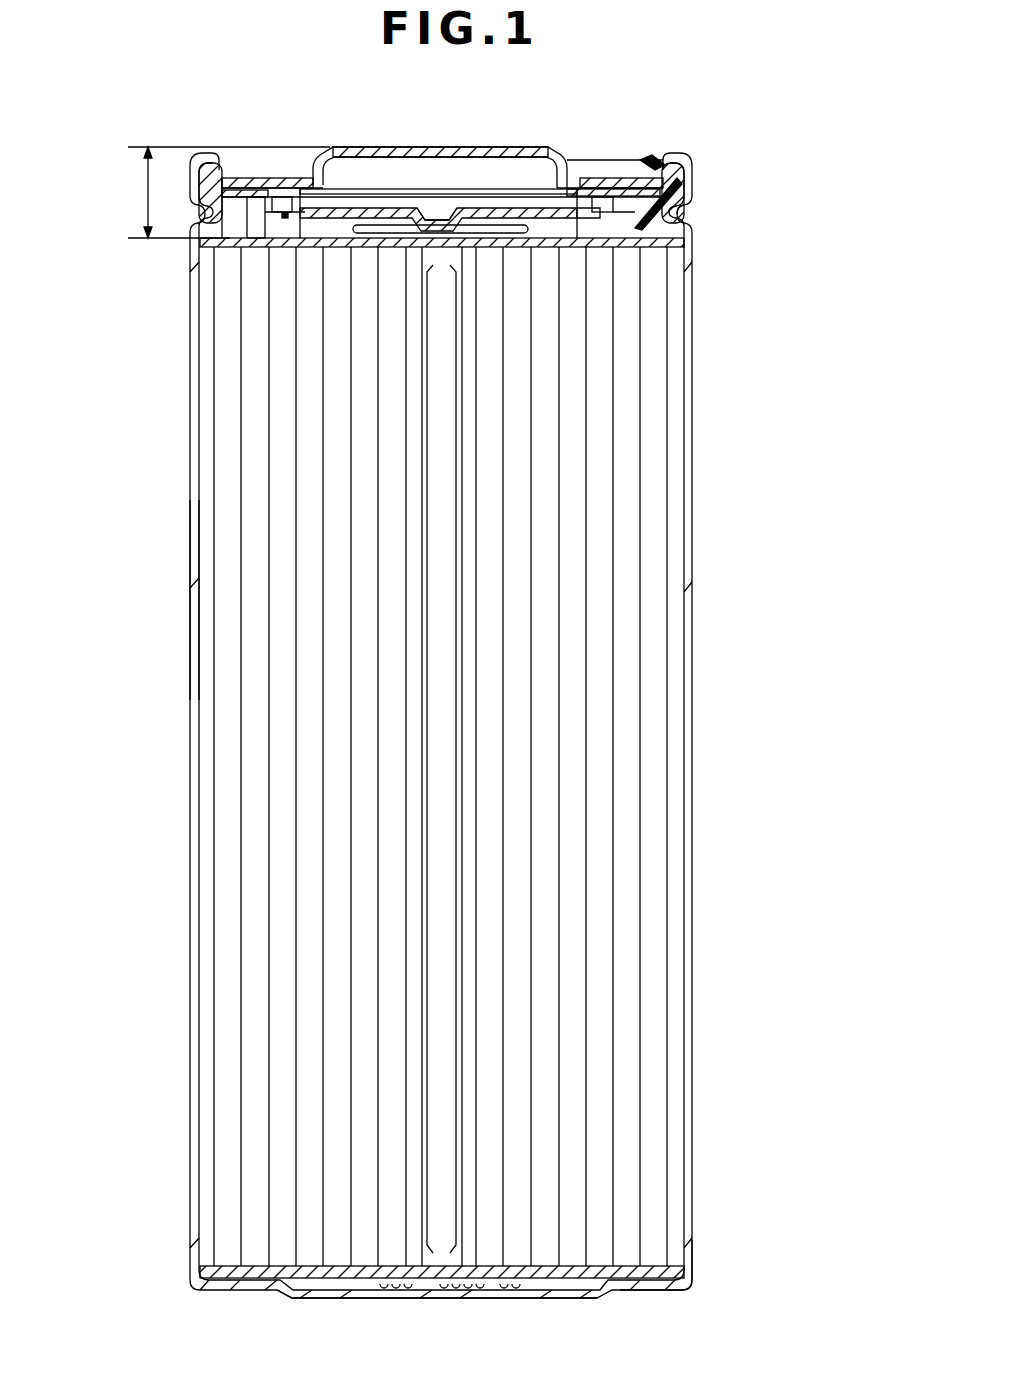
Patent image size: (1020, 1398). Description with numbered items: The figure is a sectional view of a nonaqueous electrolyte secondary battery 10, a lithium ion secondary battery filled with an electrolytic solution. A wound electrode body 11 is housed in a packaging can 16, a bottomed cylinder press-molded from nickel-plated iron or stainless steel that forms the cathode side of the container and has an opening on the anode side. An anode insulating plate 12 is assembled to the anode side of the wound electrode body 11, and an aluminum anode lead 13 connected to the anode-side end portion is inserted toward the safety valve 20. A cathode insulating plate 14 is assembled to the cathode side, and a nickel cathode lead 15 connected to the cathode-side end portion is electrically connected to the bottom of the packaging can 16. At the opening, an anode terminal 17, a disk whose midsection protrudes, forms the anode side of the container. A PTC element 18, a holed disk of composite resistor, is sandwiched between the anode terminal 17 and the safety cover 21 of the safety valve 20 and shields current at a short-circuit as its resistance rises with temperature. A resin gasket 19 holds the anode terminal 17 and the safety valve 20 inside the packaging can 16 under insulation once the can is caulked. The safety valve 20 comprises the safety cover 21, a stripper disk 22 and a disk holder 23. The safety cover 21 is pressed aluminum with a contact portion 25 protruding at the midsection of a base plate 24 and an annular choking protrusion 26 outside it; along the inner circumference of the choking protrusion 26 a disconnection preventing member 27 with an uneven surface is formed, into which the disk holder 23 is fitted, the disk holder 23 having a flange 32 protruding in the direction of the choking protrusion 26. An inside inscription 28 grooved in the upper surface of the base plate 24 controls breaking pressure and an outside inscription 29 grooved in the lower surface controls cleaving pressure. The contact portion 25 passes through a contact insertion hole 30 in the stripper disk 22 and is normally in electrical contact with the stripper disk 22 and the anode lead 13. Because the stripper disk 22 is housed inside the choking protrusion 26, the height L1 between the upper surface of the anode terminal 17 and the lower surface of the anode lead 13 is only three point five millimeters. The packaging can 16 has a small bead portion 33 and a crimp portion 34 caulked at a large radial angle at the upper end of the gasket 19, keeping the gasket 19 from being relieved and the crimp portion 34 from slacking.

The nonaqueous electrolyte secondary battery 10 is at (645, 146).
The wound electrode body 11 is at (692, 348).
The anode insulating plate 12 is at (232, 242).
The anode lead 13 is at (517, 250).
The cathode insulating plate 14 is at (652, 1276).
The cathode lead 15 is at (330, 1291).
The packaging can 16 is at (692, 573).
The anode terminal 17 is at (353, 146).
The PTC element 18 is at (593, 177).
The gasket 19 is at (219, 168).
The safety valve 20 is at (519, 189).
The safety cover 21 is at (621, 176).
The stripper disk 22 is at (384, 204).
The disk holder 23 is at (600, 214).
The base plate 24 is at (497, 194).
The contact portion 25 is at (446, 268).
The choking protrusion 26 is at (287, 214).
The disconnection preventing member 27 is at (304, 214).
The inside inscription 28 is at (403, 206).
The outside inscription 29 is at (340, 230).
The contact insertion hole 30 is at (449, 210).
The flange 32 is at (556, 228).
The bead portion 33 is at (686, 228).
The crimp portion 34 is at (666, 152).
The height L1 is at (136, 188).